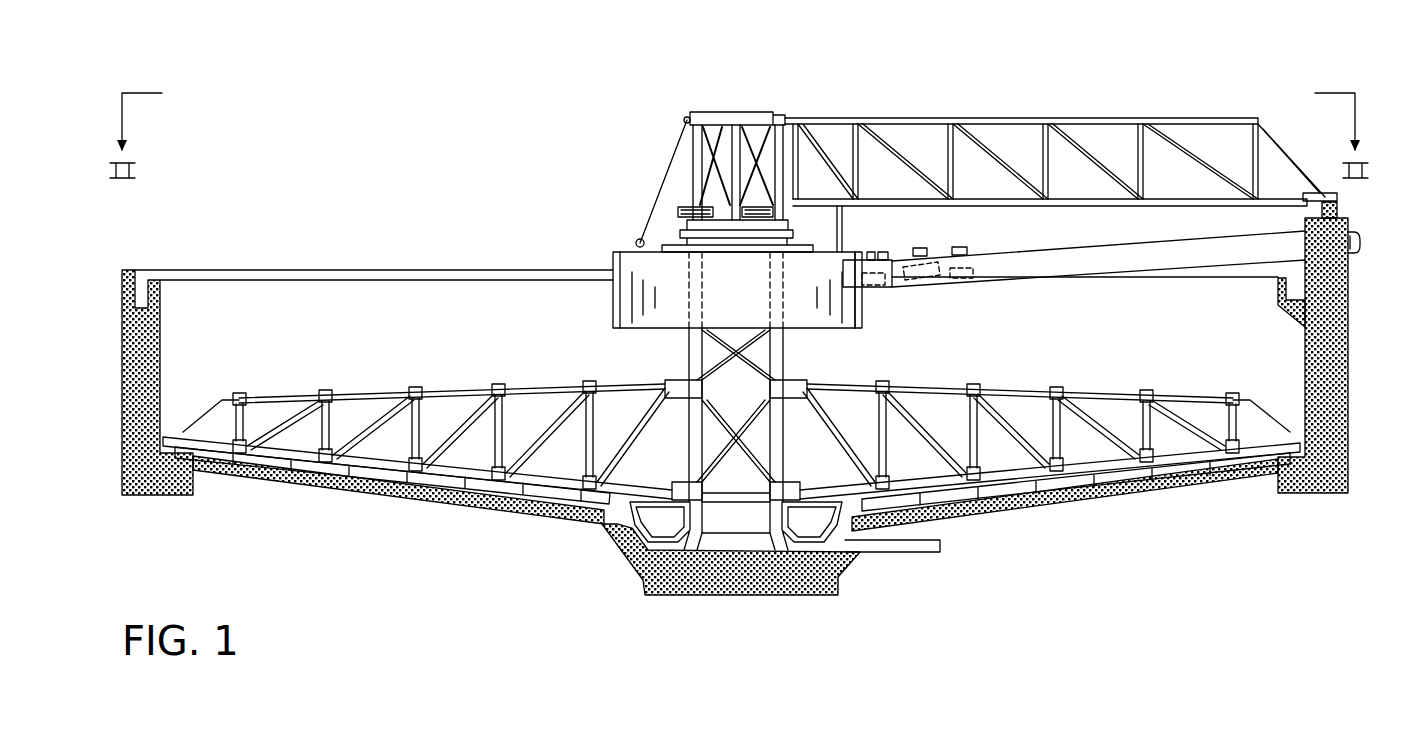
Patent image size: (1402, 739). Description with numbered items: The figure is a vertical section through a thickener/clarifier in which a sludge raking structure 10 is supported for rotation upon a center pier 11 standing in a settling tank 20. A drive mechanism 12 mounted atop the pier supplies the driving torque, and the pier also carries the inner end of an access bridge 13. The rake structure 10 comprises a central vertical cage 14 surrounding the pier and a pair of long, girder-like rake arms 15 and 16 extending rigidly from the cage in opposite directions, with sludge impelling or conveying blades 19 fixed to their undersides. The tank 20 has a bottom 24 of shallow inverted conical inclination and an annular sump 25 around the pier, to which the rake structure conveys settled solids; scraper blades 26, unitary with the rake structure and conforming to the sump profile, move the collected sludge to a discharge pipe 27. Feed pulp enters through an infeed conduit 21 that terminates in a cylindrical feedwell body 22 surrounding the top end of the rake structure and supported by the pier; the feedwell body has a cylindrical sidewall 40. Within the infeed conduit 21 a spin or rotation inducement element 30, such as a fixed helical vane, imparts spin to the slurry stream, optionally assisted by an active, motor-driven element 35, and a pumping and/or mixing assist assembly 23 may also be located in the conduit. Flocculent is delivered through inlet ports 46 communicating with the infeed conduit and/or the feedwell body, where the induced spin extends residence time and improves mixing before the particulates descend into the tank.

The sludge raking structure 10 is at (592, 362).
The center pier 11 is at (752, 409).
The drive mechanism 12 is at (680, 212).
The access bridge 13 is at (1022, 207).
The cage 14 is at (689, 357).
The long rake arm 15 is at (378, 390).
The long rake arm 16 is at (1085, 390).
The blades 19 is at (945, 492).
The settling tank 20 is at (1252, 357).
The infeed conduit 21 is at (975, 274).
The feedwell body 22 is at (860, 333).
The pumping and/or mixing assist assembly 23 is at (955, 284).
The bottom 24 is at (347, 487).
The annular sump 25 is at (605, 530).
The scraper blades 26 is at (674, 528).
The discharge pipe 27 is at (942, 544).
The spin or rotation inducement element 30 is at (880, 282).
The active element 35 is at (935, 250).
The cylindrical sidewall 40 is at (625, 310).
The inlet ports 46 is at (871, 254).